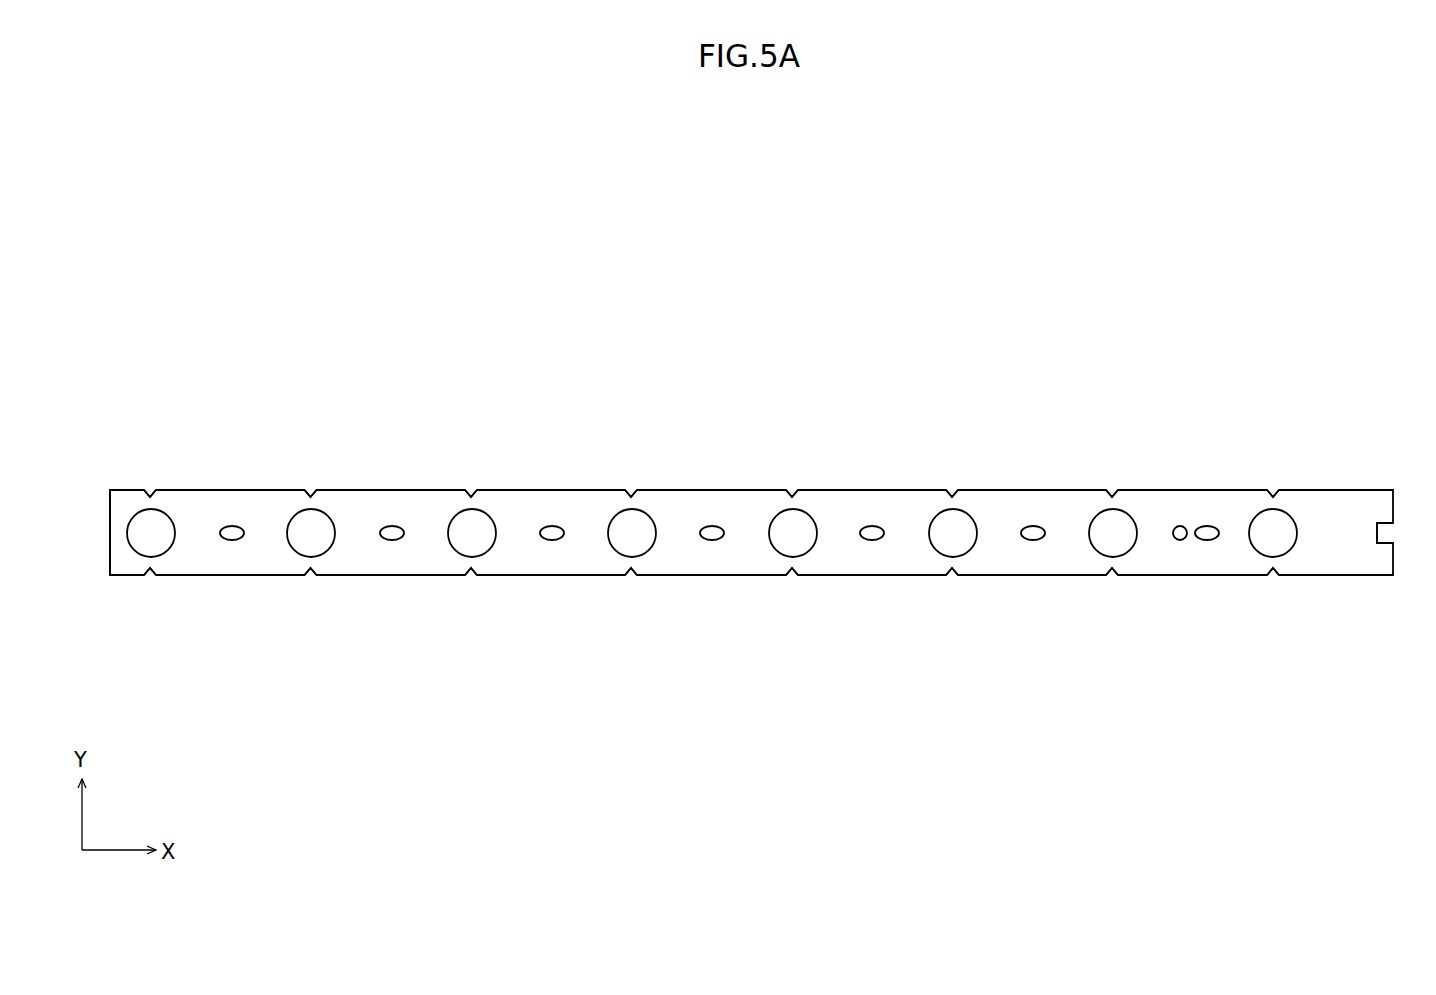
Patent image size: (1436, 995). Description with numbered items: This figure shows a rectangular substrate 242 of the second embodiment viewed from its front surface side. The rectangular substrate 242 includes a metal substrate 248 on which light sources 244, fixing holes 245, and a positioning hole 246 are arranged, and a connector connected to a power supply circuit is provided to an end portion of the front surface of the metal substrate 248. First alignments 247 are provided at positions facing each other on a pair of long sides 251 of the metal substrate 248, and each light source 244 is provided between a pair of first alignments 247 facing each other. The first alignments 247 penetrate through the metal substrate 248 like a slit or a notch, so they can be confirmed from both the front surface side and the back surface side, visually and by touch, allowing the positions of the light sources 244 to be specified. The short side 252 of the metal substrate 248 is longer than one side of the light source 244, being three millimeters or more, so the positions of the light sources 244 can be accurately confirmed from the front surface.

The rectangular substrate 242 is at (694, 460).
The light source 244 is at (1115, 536).
The fixing hole 245 is at (873, 531).
The positioning hole 246 is at (1178, 528).
The first alignment 247 is at (793, 578).
The metal substrate 248 is at (672, 541).
The long side 251 is at (1000, 490).
The short side 252 is at (110, 538).